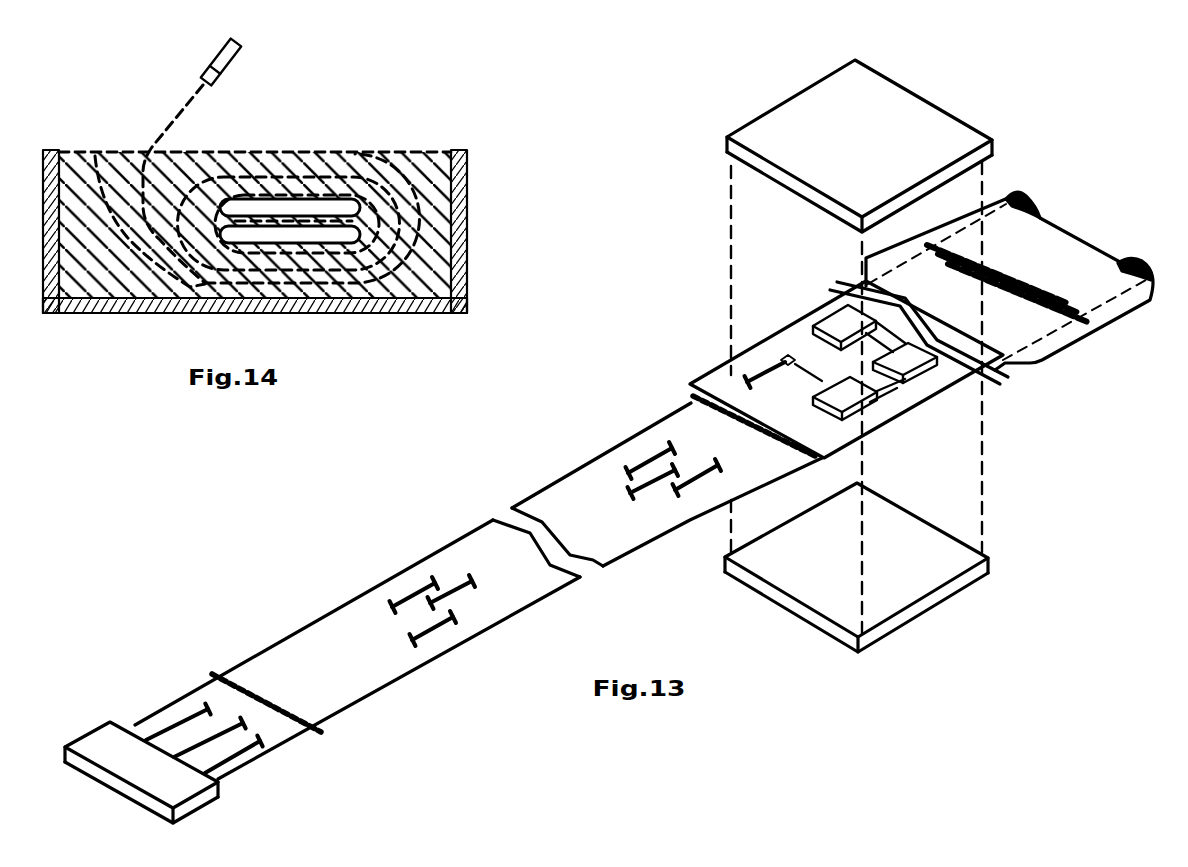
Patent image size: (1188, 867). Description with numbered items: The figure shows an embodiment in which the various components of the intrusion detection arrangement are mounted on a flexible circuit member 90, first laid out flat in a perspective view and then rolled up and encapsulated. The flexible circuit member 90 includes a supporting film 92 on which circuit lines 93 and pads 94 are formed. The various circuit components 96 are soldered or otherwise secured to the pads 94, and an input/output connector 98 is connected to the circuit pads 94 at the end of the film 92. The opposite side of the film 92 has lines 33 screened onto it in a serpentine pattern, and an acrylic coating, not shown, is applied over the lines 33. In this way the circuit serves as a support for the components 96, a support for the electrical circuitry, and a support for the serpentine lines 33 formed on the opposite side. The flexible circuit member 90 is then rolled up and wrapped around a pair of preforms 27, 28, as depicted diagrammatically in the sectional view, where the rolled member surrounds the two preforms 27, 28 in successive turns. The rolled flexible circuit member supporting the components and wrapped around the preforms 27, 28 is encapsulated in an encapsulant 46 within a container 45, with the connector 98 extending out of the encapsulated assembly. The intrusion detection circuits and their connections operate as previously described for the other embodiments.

In FIG. 14, the preform 27 is at (315, 203).
In FIG. 13, the preform 27 is at (910, 112).
In FIG. 14, the preform 28 is at (327, 233).
In FIG. 13, the preform 28 is at (897, 583).
In FIG. 13, the lines 33 is at (1033, 283).
In FIG. 14, the container 45 is at (468, 185).
In FIG. 14, the encapsulant 46 is at (182, 167).
In FIG. 14, the flexible circuit member 90 is at (173, 267).
In FIG. 13, the flexible circuit member 90 is at (582, 441).
In FIG. 13, the supporting film 92 is at (482, 547).
In FIG. 13, the circuit lines 93 is at (432, 603).
In FIG. 13, the pads 94 is at (788, 355).
In FIG. 13, the circuit components 96 is at (905, 343).
In FIG. 14, the input/output connector 98 is at (213, 62).
In FIG. 13, the input/output connector 98 is at (105, 748).